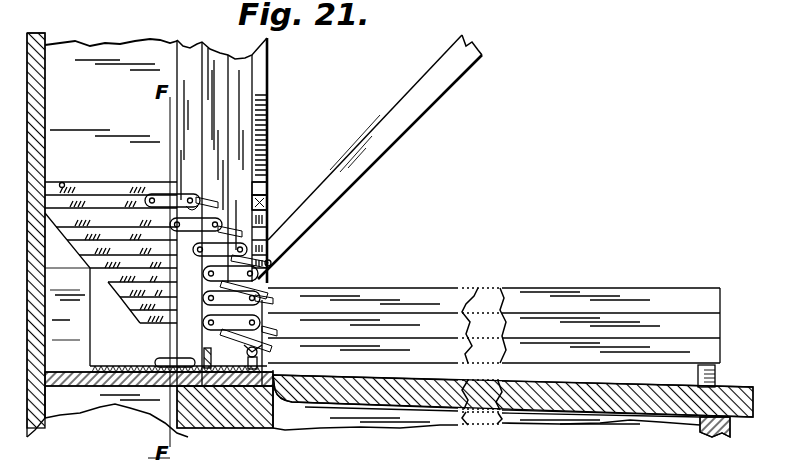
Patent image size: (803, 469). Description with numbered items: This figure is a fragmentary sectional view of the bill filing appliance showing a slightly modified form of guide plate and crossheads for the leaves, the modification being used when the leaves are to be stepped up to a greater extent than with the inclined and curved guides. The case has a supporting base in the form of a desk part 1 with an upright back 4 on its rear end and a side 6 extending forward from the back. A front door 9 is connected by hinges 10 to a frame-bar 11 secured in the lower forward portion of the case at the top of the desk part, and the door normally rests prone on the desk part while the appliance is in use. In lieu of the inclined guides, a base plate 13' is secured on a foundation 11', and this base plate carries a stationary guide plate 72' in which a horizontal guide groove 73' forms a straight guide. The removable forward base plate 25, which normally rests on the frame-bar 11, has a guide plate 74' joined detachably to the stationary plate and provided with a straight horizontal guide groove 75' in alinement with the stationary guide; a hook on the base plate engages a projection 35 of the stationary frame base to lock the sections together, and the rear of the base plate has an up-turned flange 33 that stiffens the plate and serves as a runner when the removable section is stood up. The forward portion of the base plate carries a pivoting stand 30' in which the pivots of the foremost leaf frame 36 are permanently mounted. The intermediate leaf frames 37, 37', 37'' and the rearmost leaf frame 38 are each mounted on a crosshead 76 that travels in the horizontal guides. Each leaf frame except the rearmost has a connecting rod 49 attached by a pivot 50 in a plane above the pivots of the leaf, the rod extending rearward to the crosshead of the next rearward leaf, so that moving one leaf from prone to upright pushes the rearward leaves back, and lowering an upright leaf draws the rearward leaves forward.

The desk part 1 is at (447, 422).
The upright back 4 is at (45, 95).
The side 6 is at (100, 52).
The front door 9 is at (405, 400).
The hinges 10 is at (305, 398).
The frame-bar 11 is at (225, 426).
The foundation 11' is at (67, 320).
The base plate 13' is at (159, 410).
The base plate 25 is at (263, 410).
The pivoting stand 30' is at (205, 407).
The up-turned flange 33 is at (197, 353).
The projection 35 is at (147, 388).
The foremost leaf frame 36 is at (707, 350).
The intermediate leaf frame 37 is at (515, 325).
The intermediate leaf frame 37' is at (370, 157).
The intermediate leaf frame 37'' is at (206, 71).
The rearmost leaf frame 38 is at (187, 55).
The connecting rod 49 is at (258, 256).
The pivot 50 is at (270, 260).
The guide plate 72' is at (113, 226).
The horizontal guide groove 73' is at (111, 261).
The guide plate 74' is at (278, 175).
The horizontal guide groove 75' is at (278, 195).
The crosshead 76 is at (163, 195).